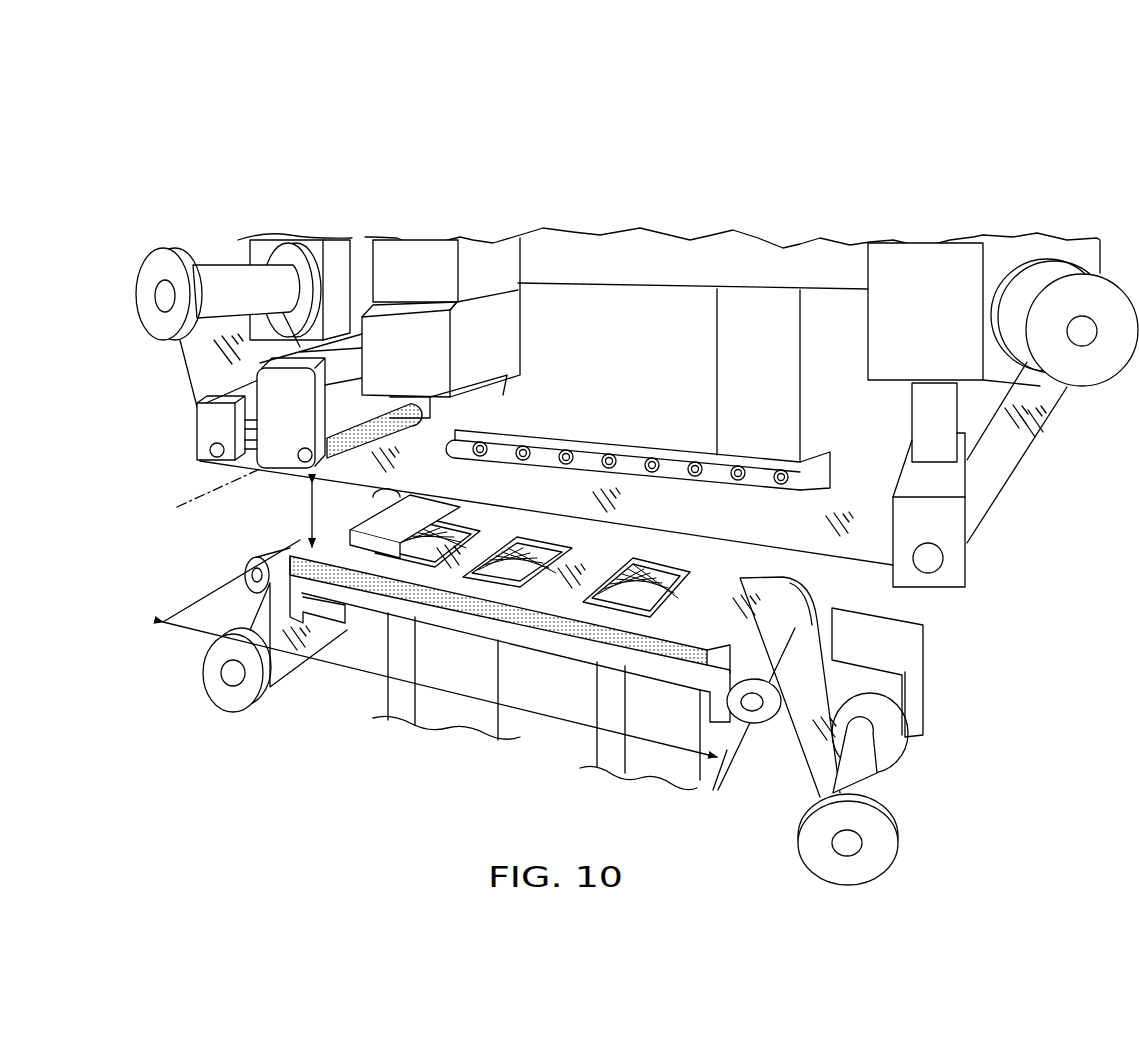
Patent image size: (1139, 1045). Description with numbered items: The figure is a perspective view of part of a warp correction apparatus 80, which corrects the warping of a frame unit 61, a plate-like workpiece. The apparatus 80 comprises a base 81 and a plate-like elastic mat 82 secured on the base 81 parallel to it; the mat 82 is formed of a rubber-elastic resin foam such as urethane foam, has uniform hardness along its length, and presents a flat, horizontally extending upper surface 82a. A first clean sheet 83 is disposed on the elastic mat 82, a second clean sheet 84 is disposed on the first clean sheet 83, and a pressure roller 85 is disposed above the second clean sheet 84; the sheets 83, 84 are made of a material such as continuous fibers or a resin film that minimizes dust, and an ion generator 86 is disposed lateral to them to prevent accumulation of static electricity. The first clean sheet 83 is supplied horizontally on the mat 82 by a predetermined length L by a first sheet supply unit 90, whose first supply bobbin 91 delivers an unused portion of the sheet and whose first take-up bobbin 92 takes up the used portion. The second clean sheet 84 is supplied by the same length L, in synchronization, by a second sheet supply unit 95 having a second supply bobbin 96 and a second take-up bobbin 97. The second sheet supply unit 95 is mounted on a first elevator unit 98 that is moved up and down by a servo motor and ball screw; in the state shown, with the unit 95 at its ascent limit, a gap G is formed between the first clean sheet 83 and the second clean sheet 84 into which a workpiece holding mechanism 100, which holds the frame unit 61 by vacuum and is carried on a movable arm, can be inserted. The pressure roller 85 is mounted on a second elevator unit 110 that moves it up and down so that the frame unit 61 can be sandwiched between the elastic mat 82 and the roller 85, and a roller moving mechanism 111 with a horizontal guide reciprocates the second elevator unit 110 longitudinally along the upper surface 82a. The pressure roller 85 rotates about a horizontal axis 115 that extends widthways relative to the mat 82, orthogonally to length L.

The warp correction apparatus 80 is at (548, 160).
The second elevator unit 110 is at (420, 243).
The roller moving mechanism 111 is at (745, 245).
The first elevator unit 98 is at (930, 242).
The second supply bobbin 96 is at (160, 323).
The second take-up bobbin 97 is at (1097, 372).
The second sheet supply unit 95 is at (1022, 510).
The pressure roller 85 is at (368, 412).
The ion generator 86 is at (585, 440).
The upper surface 82a is at (592, 562).
The second clean sheet 84 is at (780, 518).
The first clean sheet 83 is at (728, 582).
The frame unit 61 is at (467, 540).
The axis 115 is at (190, 498).
The gap G is at (312, 515).
The workpiece holding mechanism 100 is at (377, 570).
The elastic mat 82 is at (450, 600).
The base 81 is at (548, 638).
The first supply bobbin 91 is at (233, 697).
The first take-up bobbin 92 is at (893, 762).
The first sheet supply unit 90 is at (942, 708).
The predetermined length L is at (372, 683).